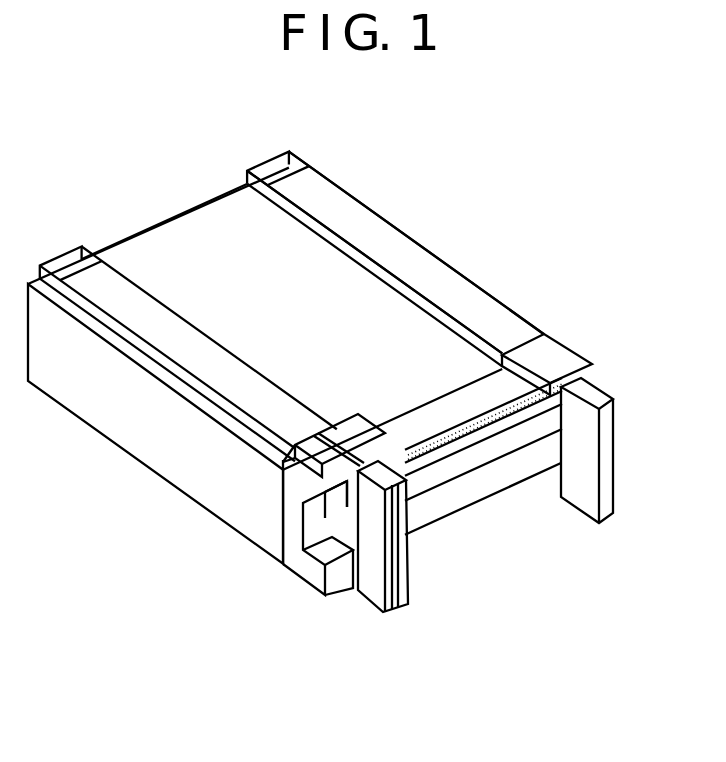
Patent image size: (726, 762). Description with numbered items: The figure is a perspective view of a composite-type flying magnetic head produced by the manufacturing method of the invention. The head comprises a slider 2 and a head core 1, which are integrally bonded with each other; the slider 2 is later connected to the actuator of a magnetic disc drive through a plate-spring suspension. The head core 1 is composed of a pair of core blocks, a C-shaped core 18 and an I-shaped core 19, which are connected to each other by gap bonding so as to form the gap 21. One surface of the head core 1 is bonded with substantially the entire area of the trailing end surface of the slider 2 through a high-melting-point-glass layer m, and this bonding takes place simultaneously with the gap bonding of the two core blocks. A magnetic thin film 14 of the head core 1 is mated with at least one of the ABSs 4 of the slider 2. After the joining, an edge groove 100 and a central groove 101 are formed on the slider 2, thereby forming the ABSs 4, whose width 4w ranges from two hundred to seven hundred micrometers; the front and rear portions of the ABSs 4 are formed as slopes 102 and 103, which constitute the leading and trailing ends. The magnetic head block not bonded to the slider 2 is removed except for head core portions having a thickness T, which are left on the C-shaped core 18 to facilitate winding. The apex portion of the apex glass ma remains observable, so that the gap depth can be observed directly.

The head core 1 is at (562, 365).
The slider 2 is at (452, 290).
The ABS 4 is at (199, 346).
The width of the ABSs 4w is at (217, 388).
The magnetic thin film 14 is at (300, 477).
The C-shaped core 18 is at (308, 569).
The I-shaped core 19 is at (370, 515).
The gap 21 is at (378, 505).
The edge groove 100 is at (106, 328).
The central groove 101 is at (187, 231).
The slope 102 is at (67, 269).
The slope 103 is at (598, 398).
The high-melting-point-glass layer m is at (322, 430).
The apex glass ma is at (405, 446).
The thickness T is at (387, 615).